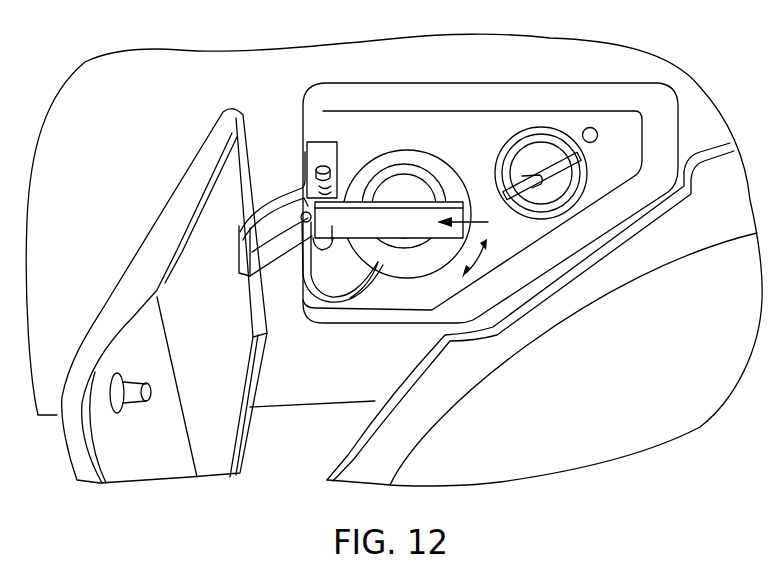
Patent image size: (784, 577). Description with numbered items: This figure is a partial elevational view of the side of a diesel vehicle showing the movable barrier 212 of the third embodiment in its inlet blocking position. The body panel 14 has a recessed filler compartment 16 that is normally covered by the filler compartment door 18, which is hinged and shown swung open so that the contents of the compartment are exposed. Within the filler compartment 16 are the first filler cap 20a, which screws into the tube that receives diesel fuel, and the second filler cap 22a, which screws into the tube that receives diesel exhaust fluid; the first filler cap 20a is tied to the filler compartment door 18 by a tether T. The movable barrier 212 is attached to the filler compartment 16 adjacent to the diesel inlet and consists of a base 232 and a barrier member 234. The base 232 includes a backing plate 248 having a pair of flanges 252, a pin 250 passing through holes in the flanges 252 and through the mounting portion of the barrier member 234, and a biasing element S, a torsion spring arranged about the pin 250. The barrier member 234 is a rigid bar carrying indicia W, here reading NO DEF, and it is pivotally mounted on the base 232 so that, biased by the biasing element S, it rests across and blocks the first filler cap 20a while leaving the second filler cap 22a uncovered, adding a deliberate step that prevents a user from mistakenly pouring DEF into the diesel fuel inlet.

The body panel 14 is at (174, 48).
The filler compartment 16 is at (568, 262).
The filler compartment door 18 is at (148, 228).
The first filler cap 20a is at (420, 180).
The second filler cap 22a is at (548, 163).
The movable barrier 212 is at (352, 146).
The base 232 is at (296, 148).
The barrier member 234 is at (440, 241).
The backing plate 248 is at (330, 141).
The pin 250 is at (323, 166).
The flanges 252 is at (337, 175).
The biasing element S is at (343, 241).
The tether T is at (356, 298).
The indicia W is at (472, 246).